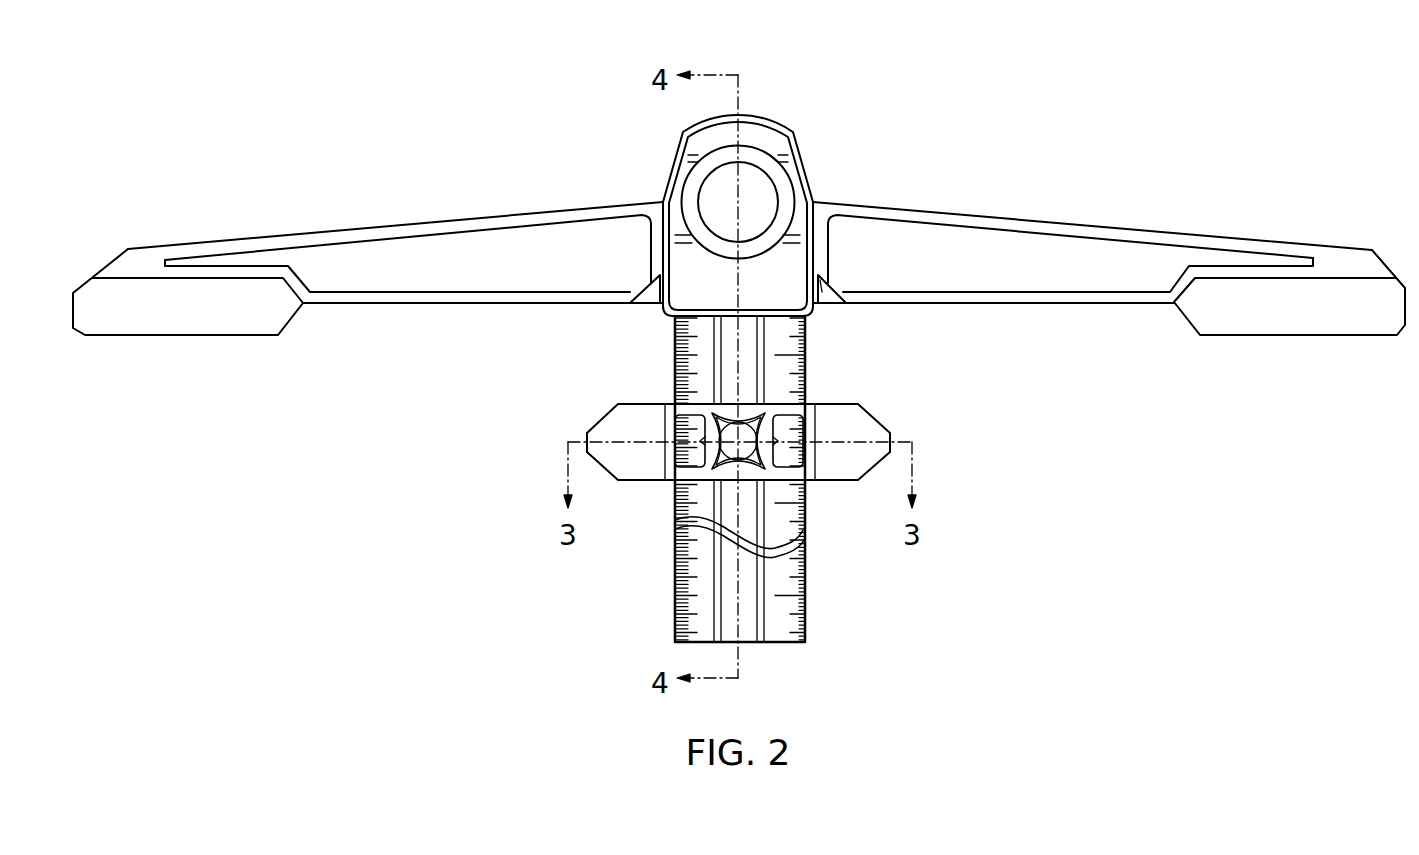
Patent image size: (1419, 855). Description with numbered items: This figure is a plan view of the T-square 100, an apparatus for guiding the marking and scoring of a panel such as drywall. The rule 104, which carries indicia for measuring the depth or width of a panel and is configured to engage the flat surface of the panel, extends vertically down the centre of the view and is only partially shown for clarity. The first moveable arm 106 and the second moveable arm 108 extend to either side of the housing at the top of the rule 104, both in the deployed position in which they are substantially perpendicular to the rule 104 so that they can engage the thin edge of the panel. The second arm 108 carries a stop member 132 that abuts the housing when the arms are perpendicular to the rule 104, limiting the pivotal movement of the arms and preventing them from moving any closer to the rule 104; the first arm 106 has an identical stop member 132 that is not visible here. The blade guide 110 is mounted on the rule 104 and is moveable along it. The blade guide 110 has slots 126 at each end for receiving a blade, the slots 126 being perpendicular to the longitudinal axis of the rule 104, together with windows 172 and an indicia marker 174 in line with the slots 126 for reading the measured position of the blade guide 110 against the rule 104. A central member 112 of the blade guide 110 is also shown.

The T-square 100 is at (390, 98).
The rule 104 is at (806, 592).
The first moveable arm 106 is at (272, 236).
The second moveable arm 108 is at (1102, 228).
The blade guide 110 is at (856, 404).
The center locking member 112 is at (763, 470).
The slots 126 is at (600, 441).
The stop member 132 is at (822, 292).
The windows 172 is at (681, 425).
The indicia marker 174 is at (708, 448).